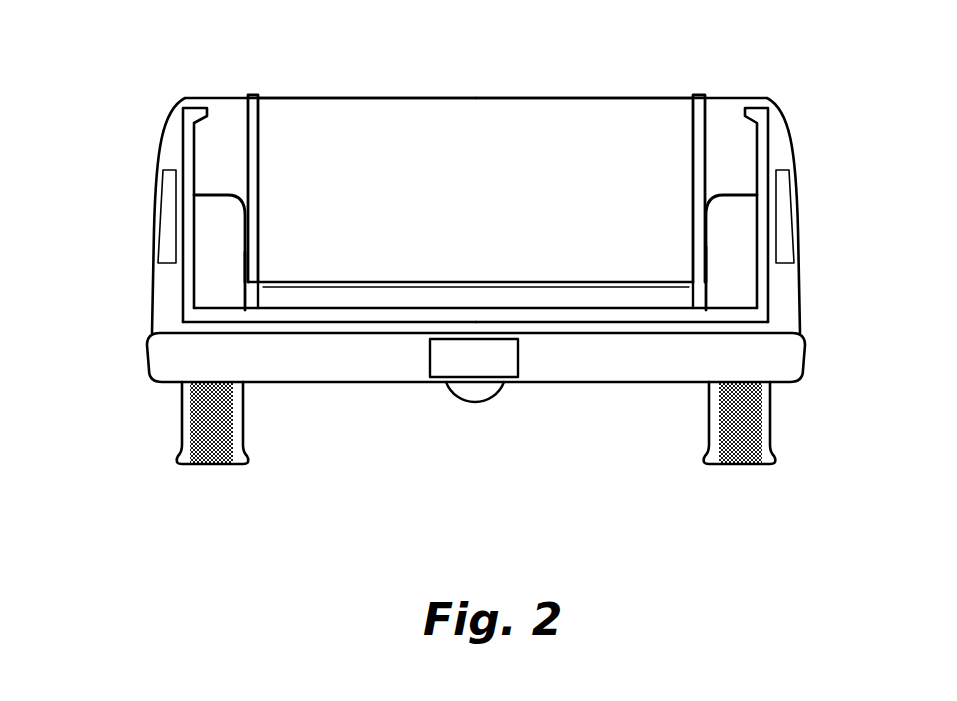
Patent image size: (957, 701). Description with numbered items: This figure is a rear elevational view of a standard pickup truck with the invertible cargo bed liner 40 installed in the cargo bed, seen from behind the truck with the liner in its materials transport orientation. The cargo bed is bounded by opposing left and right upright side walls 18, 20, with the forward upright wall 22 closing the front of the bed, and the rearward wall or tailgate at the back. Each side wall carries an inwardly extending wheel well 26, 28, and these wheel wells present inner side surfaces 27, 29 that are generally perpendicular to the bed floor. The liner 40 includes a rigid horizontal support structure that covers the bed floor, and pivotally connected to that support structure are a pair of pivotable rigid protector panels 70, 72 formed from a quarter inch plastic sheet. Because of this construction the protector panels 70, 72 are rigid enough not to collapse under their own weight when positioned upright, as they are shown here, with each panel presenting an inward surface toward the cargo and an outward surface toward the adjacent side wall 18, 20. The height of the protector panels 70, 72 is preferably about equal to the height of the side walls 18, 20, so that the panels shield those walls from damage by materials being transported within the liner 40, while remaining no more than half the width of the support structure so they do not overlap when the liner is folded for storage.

The left upright side wall 18 is at (197, 168).
The right upright side wall 20 is at (753, 167).
The forward upright wall 22 is at (228, 125).
The protector panel 72 is at (690, 157).
The protector panel 70 is at (262, 158).
The invertible cargo bed liner 40 is at (487, 245).
The wheel well 26 is at (215, 237).
The wheel well 28 is at (743, 220).
The inner side surface 27 is at (242, 252).
The inner side surface 29 is at (710, 247).